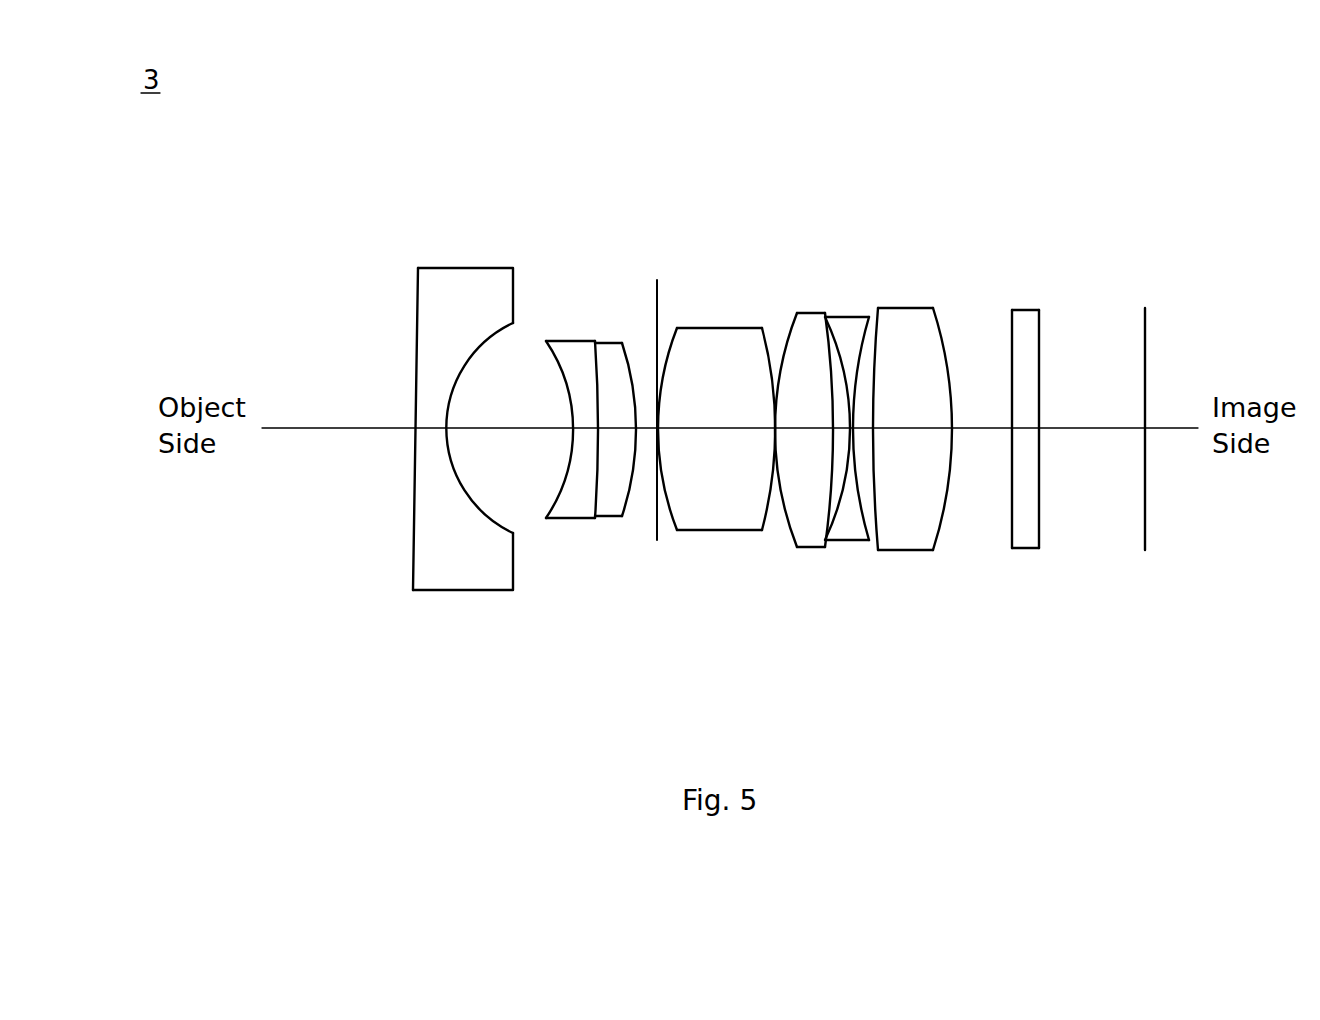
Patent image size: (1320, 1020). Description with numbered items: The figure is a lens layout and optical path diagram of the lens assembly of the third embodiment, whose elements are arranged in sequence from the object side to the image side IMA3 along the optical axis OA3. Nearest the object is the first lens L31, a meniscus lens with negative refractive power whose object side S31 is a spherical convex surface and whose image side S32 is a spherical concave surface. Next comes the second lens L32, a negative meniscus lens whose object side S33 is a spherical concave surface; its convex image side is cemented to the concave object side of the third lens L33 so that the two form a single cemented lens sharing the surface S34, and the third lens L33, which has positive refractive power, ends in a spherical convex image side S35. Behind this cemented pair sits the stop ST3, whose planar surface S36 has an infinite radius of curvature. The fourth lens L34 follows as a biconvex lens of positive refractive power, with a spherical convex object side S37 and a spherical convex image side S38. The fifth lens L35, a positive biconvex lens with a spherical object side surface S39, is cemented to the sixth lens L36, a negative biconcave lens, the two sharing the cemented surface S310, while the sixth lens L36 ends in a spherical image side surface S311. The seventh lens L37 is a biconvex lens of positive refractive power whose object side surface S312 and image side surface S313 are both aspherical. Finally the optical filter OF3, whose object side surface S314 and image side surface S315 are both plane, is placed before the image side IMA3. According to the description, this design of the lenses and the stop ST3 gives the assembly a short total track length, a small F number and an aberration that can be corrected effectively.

The first lens L31 is at (397, 433).
The second lens L32 is at (548, 414).
The third lens L33 is at (623, 383).
The stop ST3 is at (684, 397).
The fourth lens L34 is at (729, 412).
The fifth lens L35 is at (826, 416).
The sixth lens L36 is at (875, 402).
The seventh lens L37 is at (940, 387).
The optical filter OF3 is at (1049, 428).
The image side IMA3 is at (1145, 308).
The optical axis OA3 is at (313, 428).
The object side of the first lens S31 is at (415, 527).
The image side of the first lens S32 is at (483, 517).
The object side of the second lens S33 is at (560, 495).
The cemented surface of the second and third lenses S34 is at (592, 490).
The image side of the third lens S35 is at (628, 492).
The stop surface S36 is at (657, 540).
The object side of the fourth lens S37 is at (672, 505).
The image side of the fourth lens S38 is at (763, 503).
The object side surface of the fifth lens S39 is at (780, 500).
The cemented surface of the fifth and sixth lenses S310 is at (830, 500).
The image side surface of the sixth lens S311 is at (860, 500).
The object side surface of the seventh lens S312 is at (878, 510).
The image side surface of the seventh lens S313 is at (944, 500).
The object side surface of the optical filter S314 is at (1012, 520).
The image side surface of the optical filter S315 is at (1039, 532).